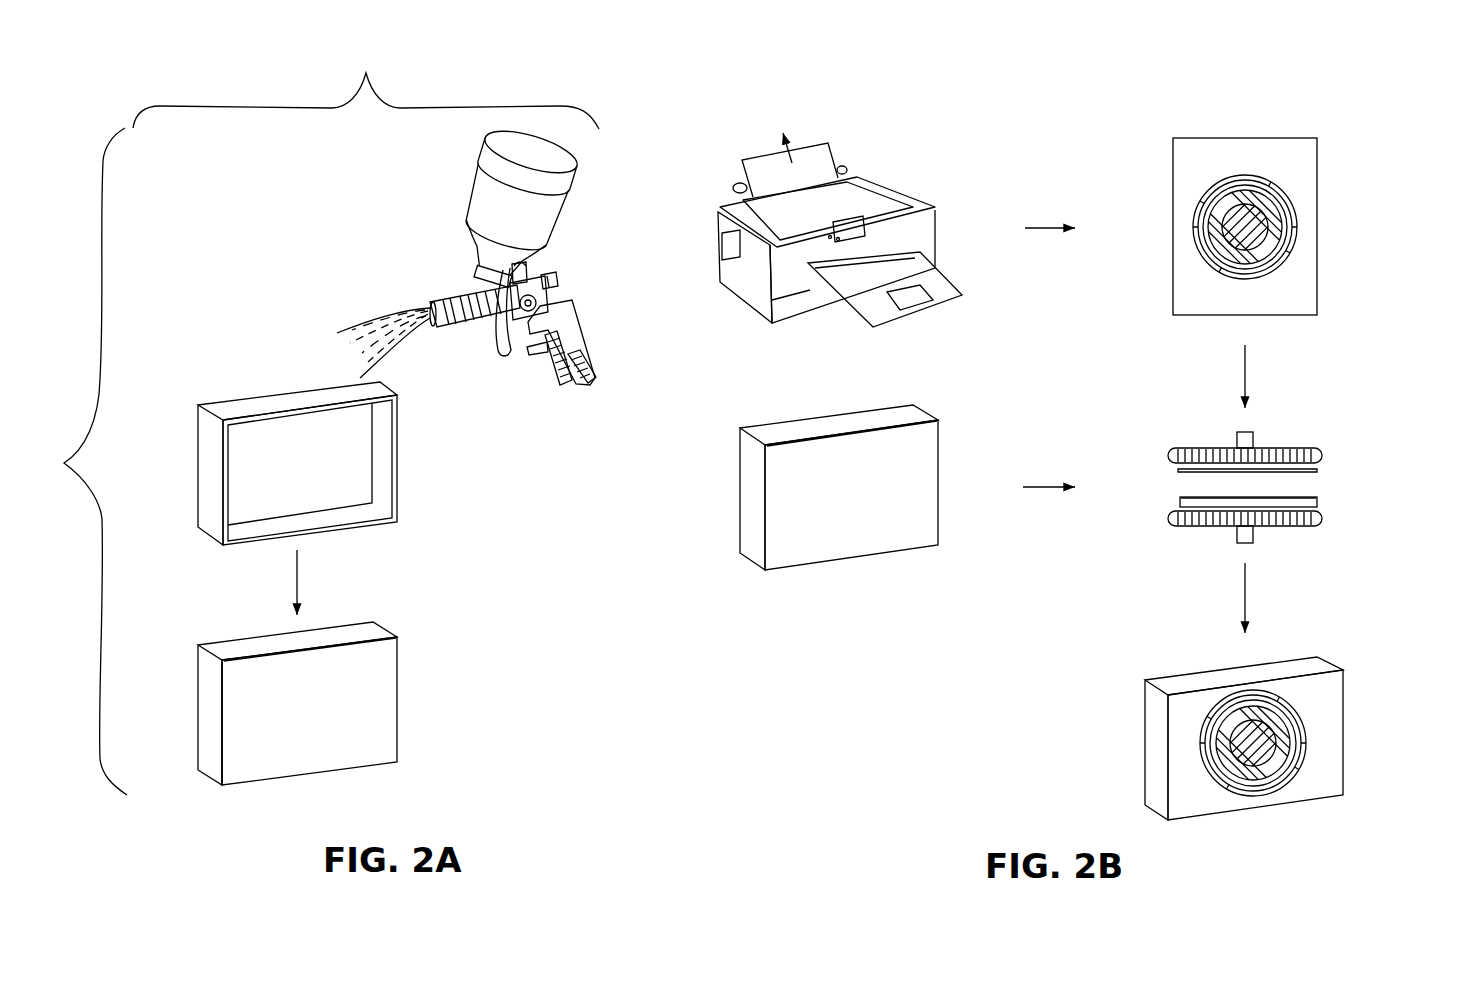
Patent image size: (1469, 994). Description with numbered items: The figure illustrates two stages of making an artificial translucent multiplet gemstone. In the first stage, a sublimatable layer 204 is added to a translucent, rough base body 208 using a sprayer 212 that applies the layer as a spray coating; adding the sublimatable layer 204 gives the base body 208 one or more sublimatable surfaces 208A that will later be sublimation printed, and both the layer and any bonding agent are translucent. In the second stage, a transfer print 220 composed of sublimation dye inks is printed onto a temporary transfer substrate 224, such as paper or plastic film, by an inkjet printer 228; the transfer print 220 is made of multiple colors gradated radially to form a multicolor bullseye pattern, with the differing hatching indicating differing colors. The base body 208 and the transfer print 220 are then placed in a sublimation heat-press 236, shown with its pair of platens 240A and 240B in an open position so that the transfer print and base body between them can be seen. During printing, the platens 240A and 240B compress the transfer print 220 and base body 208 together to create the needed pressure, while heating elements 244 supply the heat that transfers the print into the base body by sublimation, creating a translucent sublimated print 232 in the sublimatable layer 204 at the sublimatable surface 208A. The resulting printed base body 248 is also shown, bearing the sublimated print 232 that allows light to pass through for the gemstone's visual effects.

In FIG. 2A, the sublimatable layer 204 is at (220, 717).
In FIG. 2A, the base body 208 is at (259, 411).
In FIG. 2B, the base body 208 is at (787, 422).
In FIG. 2A, the sublimatable surface 208A is at (378, 703).
In FIG. 2B, the sublimatable surface 208A is at (923, 452).
In FIG. 2A, the sprayer 212 is at (432, 226).
In FIG. 2B, the transfer print 220 is at (1292, 192).
In FIG. 2B, the temporary transfer substrate 224 is at (1187, 168).
In FIG. 2B, the inkjet printer 228 is at (882, 155).
In FIG. 2B, the sublimated print 232 is at (1312, 743).
In FIG. 2B, the sublimation heat-press 236 is at (1291, 489).
In FIG. 2B, the platen 240A is at (1198, 446).
In FIG. 2B, the platen 240B is at (1197, 529).
In FIG. 2B, the heating element 244 is at (1300, 448).
In FIG. 2B, the printed base body 248 is at (1140, 743).